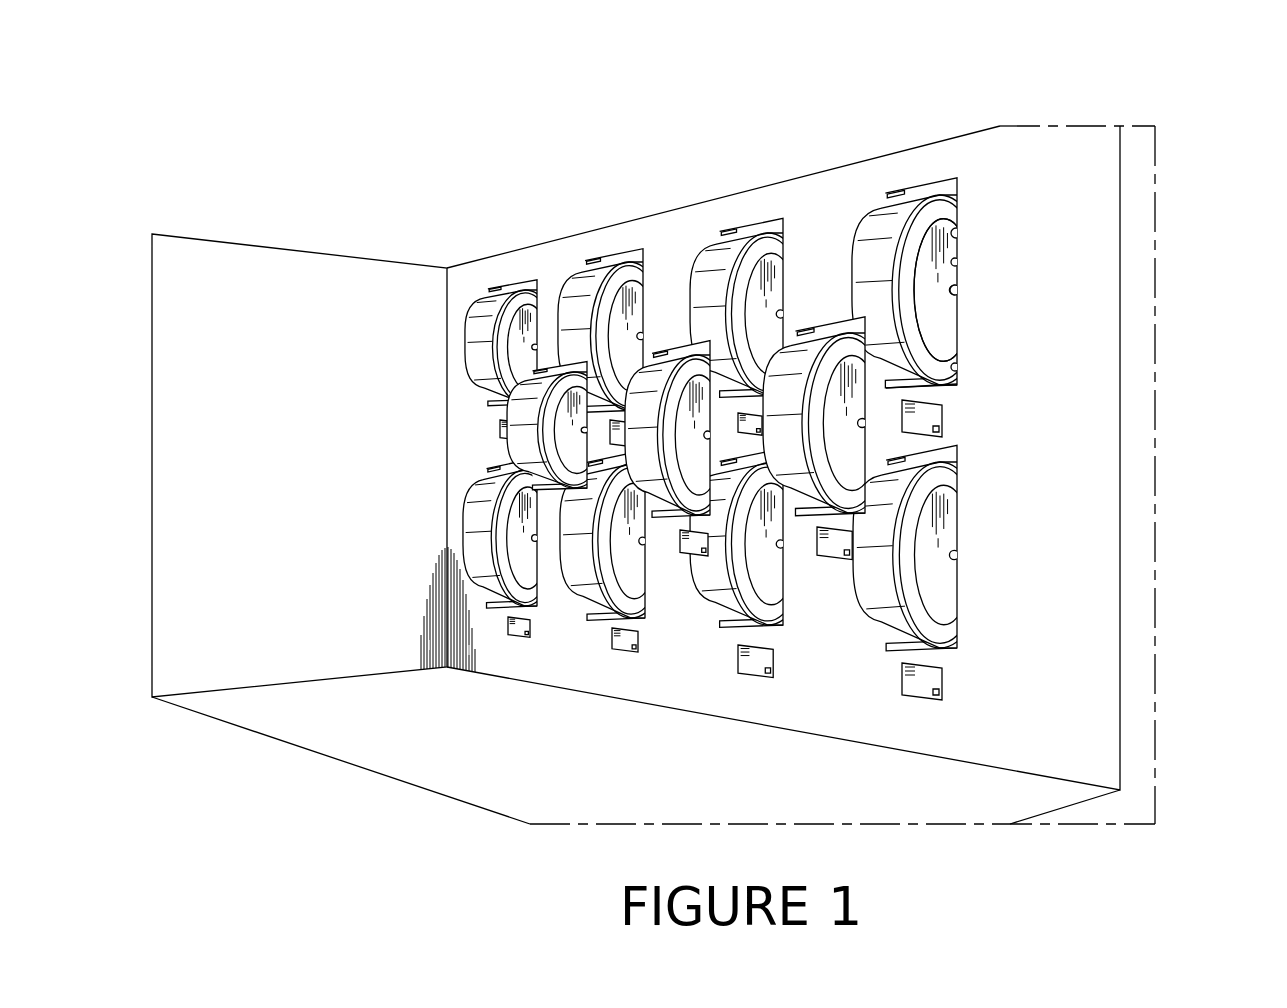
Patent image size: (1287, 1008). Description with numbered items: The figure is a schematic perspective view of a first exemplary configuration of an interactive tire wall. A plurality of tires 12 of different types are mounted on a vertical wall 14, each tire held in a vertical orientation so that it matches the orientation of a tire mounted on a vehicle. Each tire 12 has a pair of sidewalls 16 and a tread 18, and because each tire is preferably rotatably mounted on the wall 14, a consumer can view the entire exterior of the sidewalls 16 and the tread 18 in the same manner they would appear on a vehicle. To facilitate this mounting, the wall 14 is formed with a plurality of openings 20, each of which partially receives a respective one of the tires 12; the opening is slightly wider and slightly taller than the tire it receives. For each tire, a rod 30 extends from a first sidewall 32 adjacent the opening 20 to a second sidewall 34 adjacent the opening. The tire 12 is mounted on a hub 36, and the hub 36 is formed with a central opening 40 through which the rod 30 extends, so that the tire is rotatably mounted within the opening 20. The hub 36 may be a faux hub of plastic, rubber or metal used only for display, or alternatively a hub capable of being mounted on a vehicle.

The tire 12 is at (772, 383).
The vertical wall 14 is at (1119, 172).
The sidewall 16 is at (933, 208).
The tread 18 is at (893, 213).
The opening 20 is at (957, 235).
The rod 30 is at (957, 260).
The first sidewall 32 is at (927, 384).
The second sidewall 34 is at (955, 364).
The hub 36 is at (968, 319).
The central opening 40 is at (955, 298).